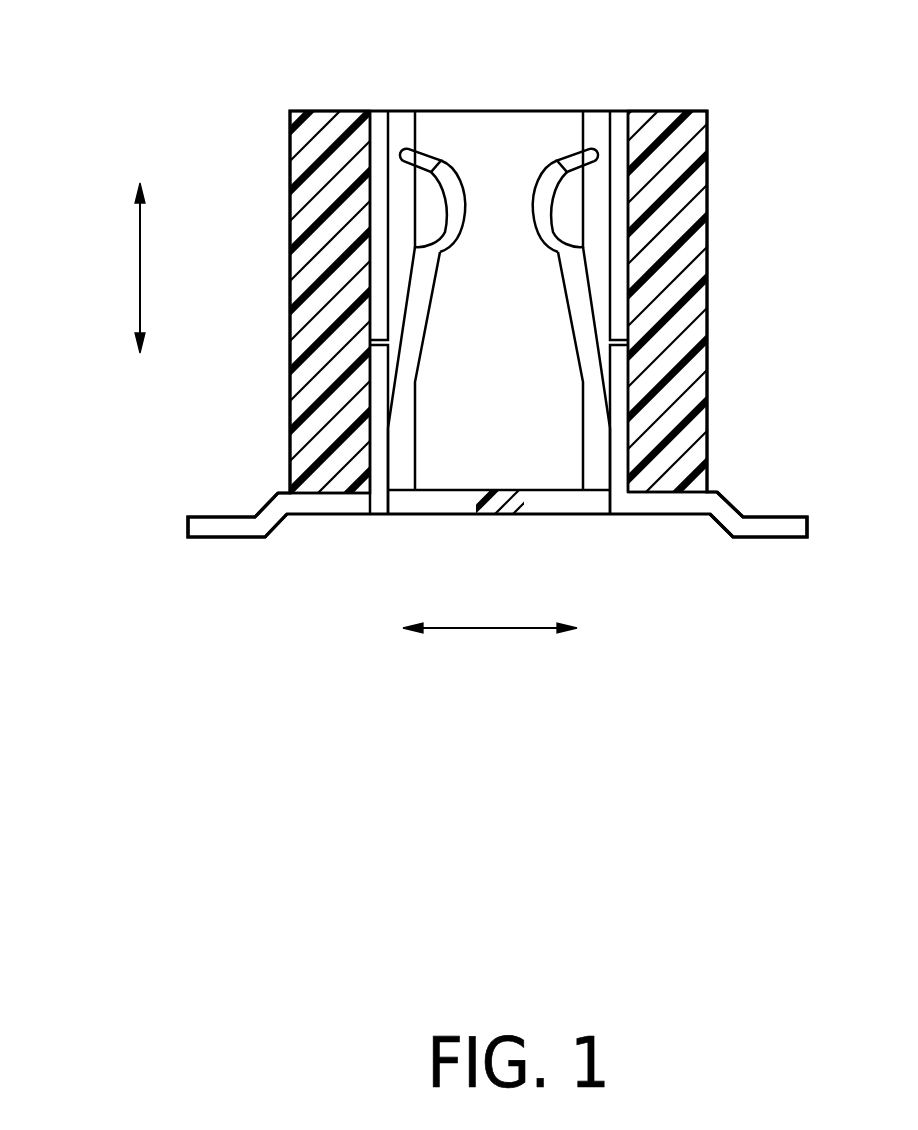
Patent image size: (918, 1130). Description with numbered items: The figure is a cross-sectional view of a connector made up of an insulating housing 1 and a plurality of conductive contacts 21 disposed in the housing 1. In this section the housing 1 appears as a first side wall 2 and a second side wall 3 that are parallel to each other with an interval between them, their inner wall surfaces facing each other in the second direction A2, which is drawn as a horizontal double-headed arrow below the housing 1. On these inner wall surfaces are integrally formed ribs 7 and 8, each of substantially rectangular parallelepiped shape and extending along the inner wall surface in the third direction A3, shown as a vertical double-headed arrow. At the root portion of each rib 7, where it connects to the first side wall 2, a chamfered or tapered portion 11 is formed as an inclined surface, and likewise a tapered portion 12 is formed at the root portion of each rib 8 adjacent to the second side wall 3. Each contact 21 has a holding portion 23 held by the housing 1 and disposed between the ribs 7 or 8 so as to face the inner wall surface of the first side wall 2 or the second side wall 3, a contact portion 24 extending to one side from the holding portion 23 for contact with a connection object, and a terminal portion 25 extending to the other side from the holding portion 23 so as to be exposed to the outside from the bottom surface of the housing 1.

The insulating housing 1 is at (707, 330).
The first side wall 2 is at (310, 268).
The second side wall 3 is at (694, 218).
The rib 7 is at (417, 135).
The rib 8 is at (581, 140).
The tapered portion 11 is at (380, 112).
The tapered portion 12 is at (621, 122).
The contact 21 is at (425, 336).
The holding portion 23 is at (378, 455).
The contact portion 24 is at (455, 244).
The terminal portion 25 is at (210, 525).
The second direction A2 is at (493, 633).
The third direction A3 is at (137, 258).